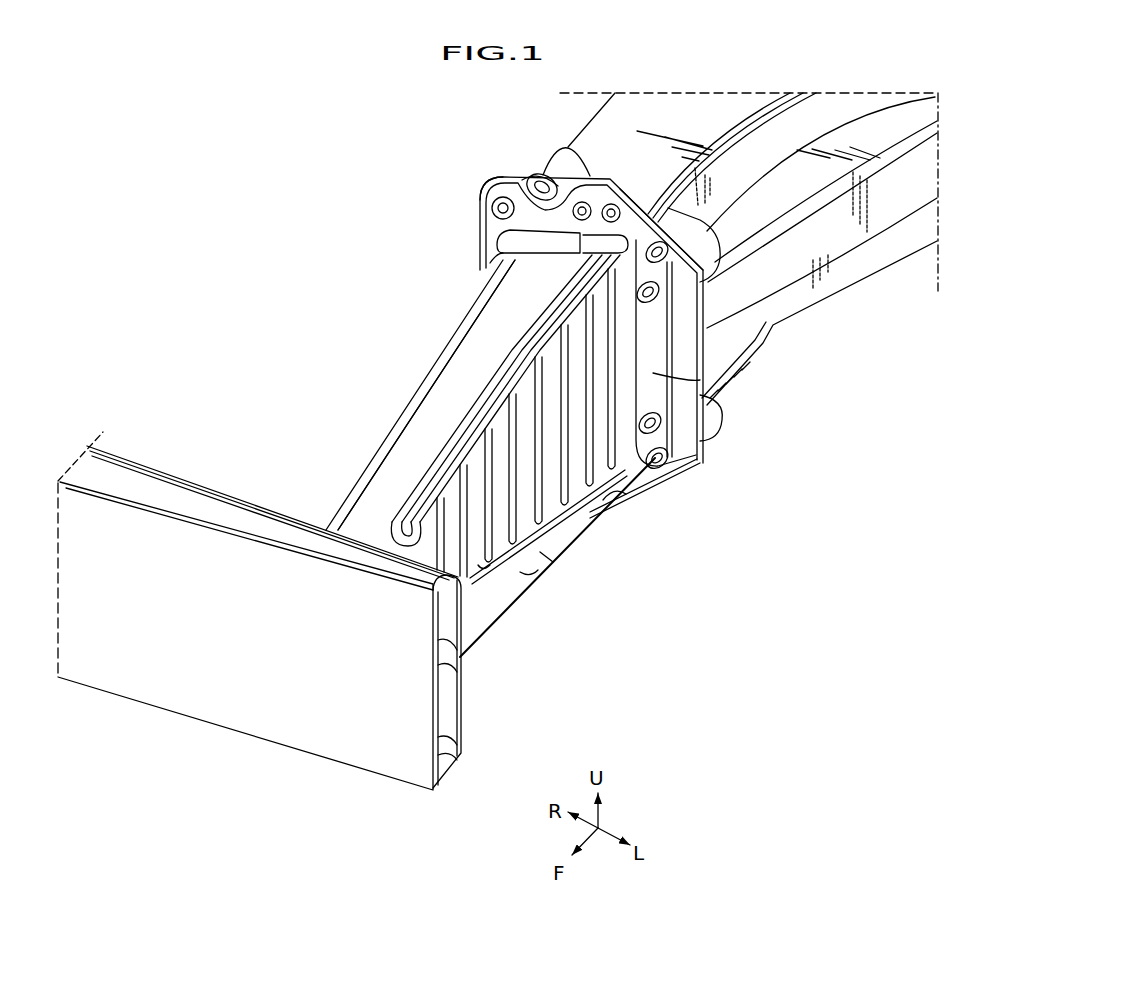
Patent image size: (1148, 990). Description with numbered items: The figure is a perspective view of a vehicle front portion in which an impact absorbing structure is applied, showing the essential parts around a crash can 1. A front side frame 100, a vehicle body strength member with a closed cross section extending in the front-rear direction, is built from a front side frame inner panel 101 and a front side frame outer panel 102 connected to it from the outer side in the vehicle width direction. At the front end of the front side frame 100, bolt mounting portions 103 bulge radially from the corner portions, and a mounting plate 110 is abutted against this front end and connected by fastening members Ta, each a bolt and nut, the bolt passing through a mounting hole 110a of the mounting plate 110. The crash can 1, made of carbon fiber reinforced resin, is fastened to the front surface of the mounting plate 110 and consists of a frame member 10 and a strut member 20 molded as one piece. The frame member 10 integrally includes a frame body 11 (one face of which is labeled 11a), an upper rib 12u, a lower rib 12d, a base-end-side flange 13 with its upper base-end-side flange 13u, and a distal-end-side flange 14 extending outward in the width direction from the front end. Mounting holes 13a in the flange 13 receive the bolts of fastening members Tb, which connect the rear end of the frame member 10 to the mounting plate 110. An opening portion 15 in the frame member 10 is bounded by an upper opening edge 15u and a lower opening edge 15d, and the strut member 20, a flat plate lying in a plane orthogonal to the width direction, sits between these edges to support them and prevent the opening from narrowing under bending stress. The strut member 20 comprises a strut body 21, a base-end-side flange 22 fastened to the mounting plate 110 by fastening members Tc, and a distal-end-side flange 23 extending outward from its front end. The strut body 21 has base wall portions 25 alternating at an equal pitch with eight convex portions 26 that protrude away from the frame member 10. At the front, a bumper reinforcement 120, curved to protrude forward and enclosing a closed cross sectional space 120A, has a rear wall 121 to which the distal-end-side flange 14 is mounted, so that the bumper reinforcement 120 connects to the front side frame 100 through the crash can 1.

The crash can 1 is at (395, 312).
The frame member 10 is at (400, 423).
The frame body 11 is at (373, 460).
The flat face of outer rail 11a is at (453, 390).
The upper rib 12u is at (467, 400).
The lower rib 12d is at (573, 547).
The base-end-side flange 13 is at (543, 298).
The upper base-end-side flange 13u is at (488, 262).
The mounting hole 13a is at (480, 203).
The distal-end-side flange 14 is at (485, 562).
The opening portion 15 is at (546, 463).
The upper opening edge 15u is at (562, 330).
The lower opening edge 15d is at (480, 607).
The strut member 20 is at (679, 362).
The strut body 21 is at (552, 566).
The base-end-side flange 22 is at (653, 373).
The distal-end-side flange 23 is at (397, 520).
The base wall portion 25 is at (533, 580).
The convex portion 26 is at (612, 496).
The front side frame 100 is at (847, 306).
The front side frame inner panel 101 is at (593, 117).
The front side frame outer panel 102 is at (887, 262).
The bolt mounting portion 103 is at (556, 152).
The mounting plate 110 is at (687, 483).
The mounting hole 110a is at (537, 180).
The bumper reinforcement 120 is at (303, 625).
The closed cross sectional space 120A is at (452, 693).
The rear wall 121 is at (440, 660).
The fastening member Ta is at (520, 180).
The fastening member Tb is at (490, 210).
The fastening member Tc is at (645, 306).